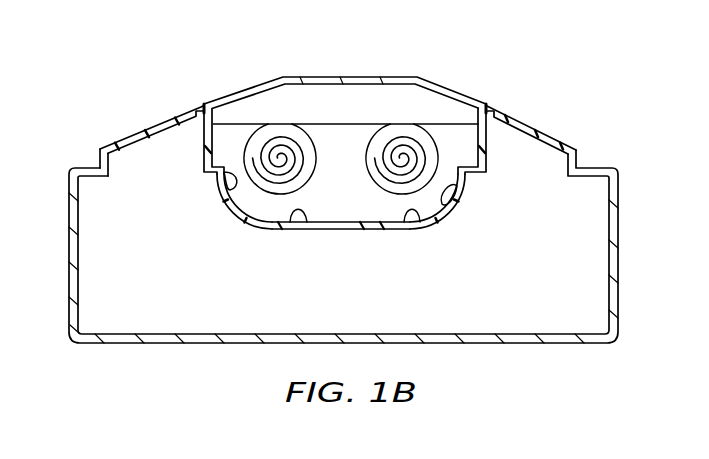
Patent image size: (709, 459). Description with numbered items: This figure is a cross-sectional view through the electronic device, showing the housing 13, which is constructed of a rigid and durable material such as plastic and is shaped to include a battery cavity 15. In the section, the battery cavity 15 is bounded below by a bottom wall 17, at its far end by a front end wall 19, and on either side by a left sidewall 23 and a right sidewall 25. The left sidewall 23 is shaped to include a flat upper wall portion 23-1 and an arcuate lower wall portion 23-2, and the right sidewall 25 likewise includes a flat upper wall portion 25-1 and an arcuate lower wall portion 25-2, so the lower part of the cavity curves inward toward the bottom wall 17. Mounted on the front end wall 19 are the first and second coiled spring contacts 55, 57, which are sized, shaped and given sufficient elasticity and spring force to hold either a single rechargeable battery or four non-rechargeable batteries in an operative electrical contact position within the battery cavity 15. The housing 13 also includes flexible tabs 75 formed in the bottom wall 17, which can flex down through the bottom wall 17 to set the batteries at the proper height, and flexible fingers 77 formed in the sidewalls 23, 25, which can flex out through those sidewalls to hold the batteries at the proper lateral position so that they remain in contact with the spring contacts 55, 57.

The housing 13 is at (620, 203).
The battery cavity 15 is at (325, 140).
The bottom wall 17 is at (343, 228).
The front end wall 19 is at (347, 157).
The left sidewall 23 is at (187, 176).
The flat upper wall portion 23-1 is at (205, 133).
The arcuate lower wall portion 23-2 is at (237, 207).
The right sidewall 25 is at (502, 184).
The flat upper wall portion 25-1 is at (480, 150).
The arcuate lower wall portion 25-2 is at (463, 200).
The first coiled spring contact 55 is at (252, 137).
The second coiled spring contact 57 is at (430, 137).
The flexible tabs 75 is at (307, 218).
The flexible fingers 77 is at (233, 181).